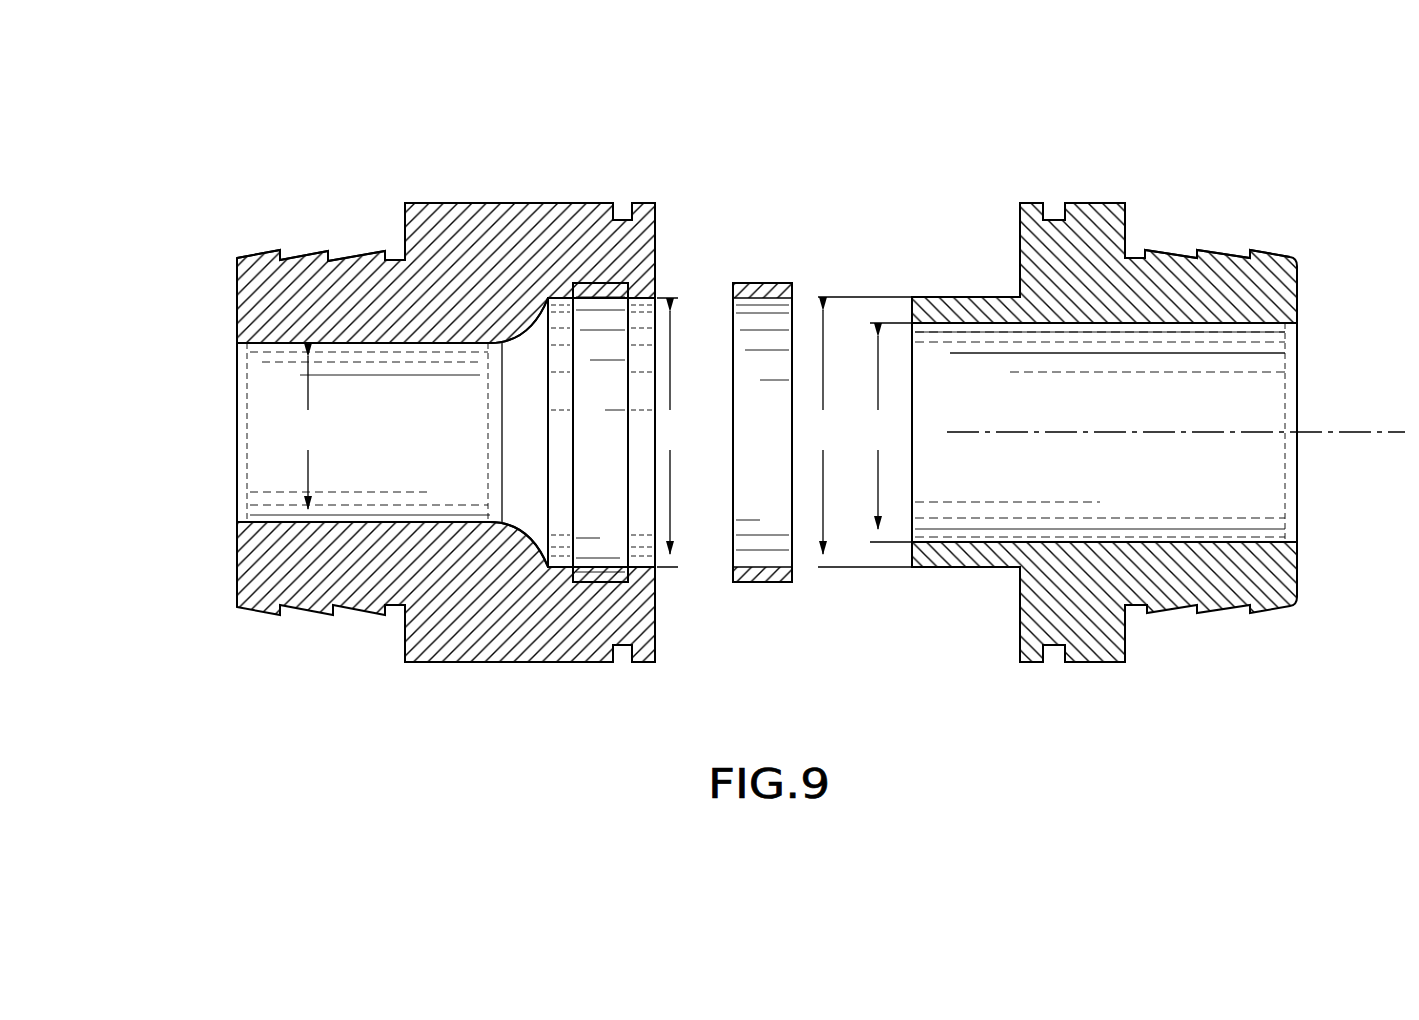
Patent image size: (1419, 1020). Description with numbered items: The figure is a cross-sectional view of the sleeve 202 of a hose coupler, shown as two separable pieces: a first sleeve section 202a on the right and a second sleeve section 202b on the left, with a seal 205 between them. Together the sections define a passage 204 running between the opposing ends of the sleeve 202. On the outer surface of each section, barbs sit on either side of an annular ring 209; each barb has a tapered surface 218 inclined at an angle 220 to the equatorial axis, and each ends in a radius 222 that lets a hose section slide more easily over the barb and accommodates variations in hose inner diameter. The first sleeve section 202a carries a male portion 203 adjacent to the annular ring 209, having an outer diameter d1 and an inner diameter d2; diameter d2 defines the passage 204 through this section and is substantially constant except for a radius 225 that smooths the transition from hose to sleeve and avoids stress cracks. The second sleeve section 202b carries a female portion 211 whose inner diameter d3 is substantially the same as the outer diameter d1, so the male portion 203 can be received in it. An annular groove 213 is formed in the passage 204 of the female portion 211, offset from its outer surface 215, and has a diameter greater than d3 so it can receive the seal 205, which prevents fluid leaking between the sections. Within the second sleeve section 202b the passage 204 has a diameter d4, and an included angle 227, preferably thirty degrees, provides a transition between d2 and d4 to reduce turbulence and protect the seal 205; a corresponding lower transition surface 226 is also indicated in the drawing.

The sleeve 202 is at (767, 399).
The first sleeve section 202a is at (1127, 662).
The second sleeve section 202b is at (470, 662).
The male portion 203 is at (963, 568).
The passage 204 is at (240, 476).
The seal 205 is at (761, 583).
The annular ring 209 is at (457, 203).
The female portion 211 is at (640, 313).
The annular groove 213 is at (597, 288).
The outer surface 215 is at (656, 620).
The tapered surface 218 is at (1157, 250).
The angle 220 is at (1220, 367).
The radius 222 is at (363, 253).
The radius 225 is at (1298, 323).
The lower tapered surface 226 is at (513, 525).
The included angle 227 is at (513, 340).
The outer diameter d1 is at (860, 432).
The inner diameter d2 is at (888, 432).
The inner diameter d3 is at (674, 432).
The diameter d4 is at (307, 432).